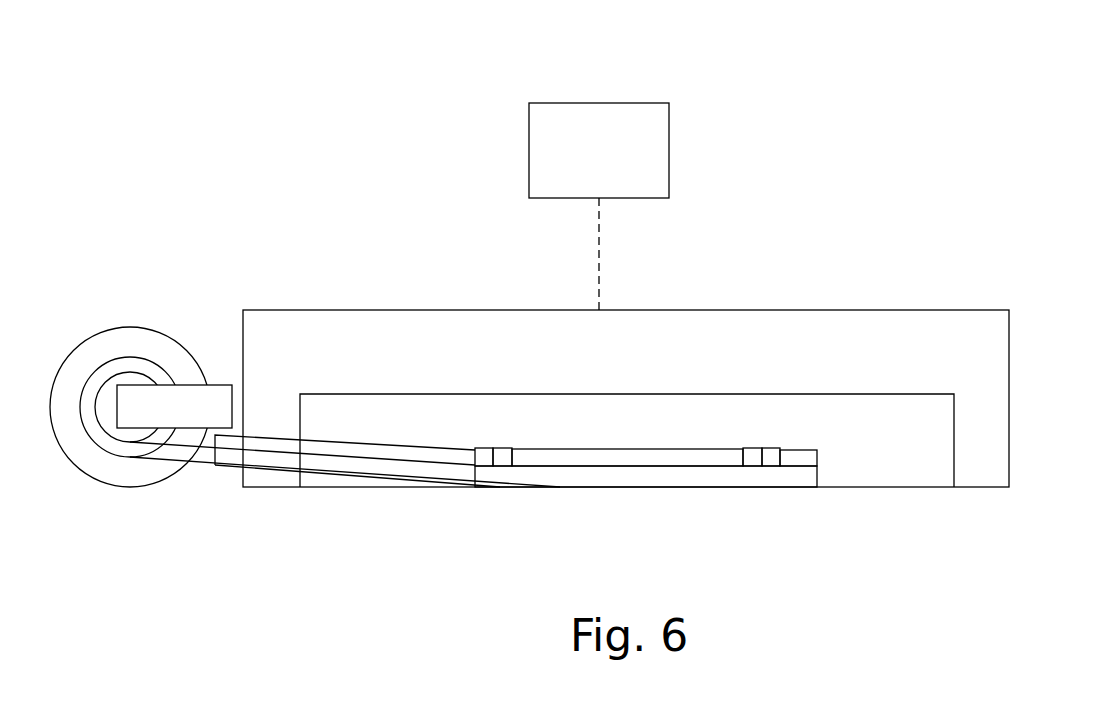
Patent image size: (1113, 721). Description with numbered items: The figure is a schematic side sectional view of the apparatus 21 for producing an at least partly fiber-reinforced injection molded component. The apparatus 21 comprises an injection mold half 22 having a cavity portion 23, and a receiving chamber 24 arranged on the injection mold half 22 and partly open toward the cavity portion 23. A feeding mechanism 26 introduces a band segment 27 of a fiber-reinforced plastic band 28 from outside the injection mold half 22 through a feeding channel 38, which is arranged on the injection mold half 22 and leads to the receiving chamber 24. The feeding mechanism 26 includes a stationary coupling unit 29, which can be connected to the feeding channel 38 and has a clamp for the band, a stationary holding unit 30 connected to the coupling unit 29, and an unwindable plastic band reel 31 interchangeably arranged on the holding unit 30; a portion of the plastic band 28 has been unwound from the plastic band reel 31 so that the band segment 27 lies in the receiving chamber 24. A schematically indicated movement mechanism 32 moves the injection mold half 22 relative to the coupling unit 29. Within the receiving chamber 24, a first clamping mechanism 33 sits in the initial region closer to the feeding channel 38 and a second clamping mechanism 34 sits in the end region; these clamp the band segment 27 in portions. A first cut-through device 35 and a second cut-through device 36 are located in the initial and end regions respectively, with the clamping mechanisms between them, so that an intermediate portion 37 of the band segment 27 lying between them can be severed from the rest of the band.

The apparatus 21 is at (366, 183).
The injection mold half 22 is at (916, 347).
The cavity portion 23 is at (925, 423).
The receiving chamber 24 is at (795, 462).
The feeding mechanism 26 is at (305, 385).
The band segment 27 is at (738, 488).
The fiber-reinforced plastic band 28 is at (202, 473).
The coupling unit 29 is at (236, 437).
The holding unit 30 is at (188, 375).
The plastic band reel 31 is at (113, 472).
The movement mechanism 32 is at (602, 128).
The first clamping mechanism 33 is at (503, 462).
The second clamping mechanism 34 is at (750, 462).
The first cut-through device 35 is at (482, 462).
The second cut-through device 36 is at (767, 462).
The intermediate portion 37 is at (606, 467).
The feeding channel 38 is at (370, 455).